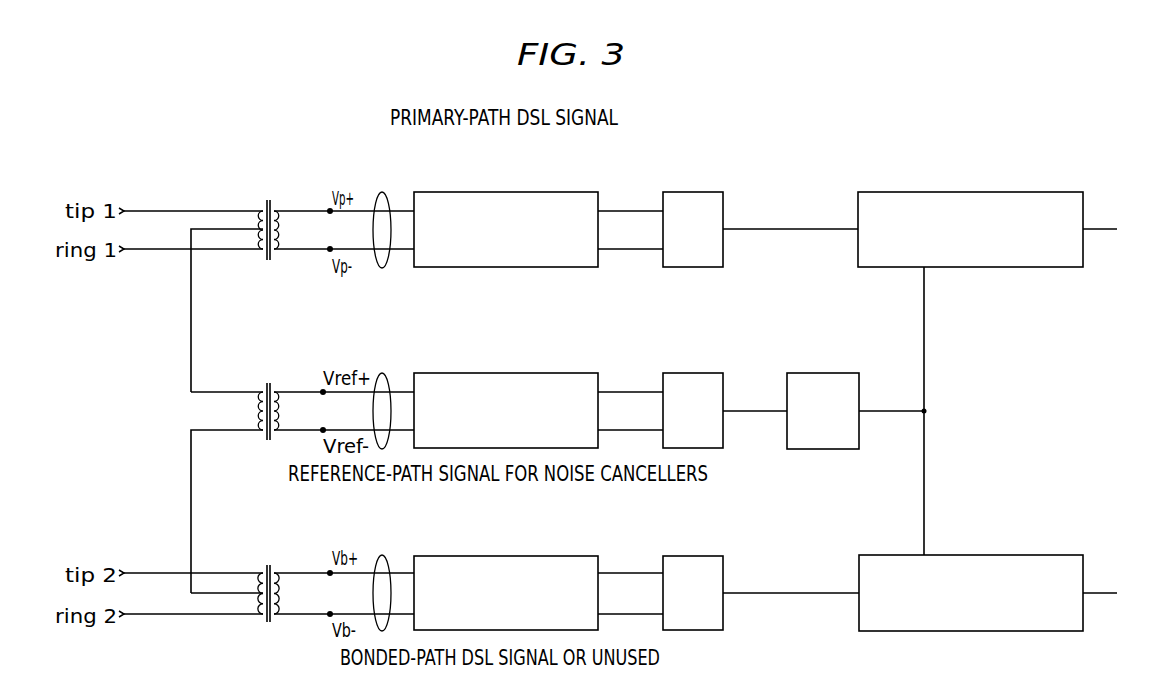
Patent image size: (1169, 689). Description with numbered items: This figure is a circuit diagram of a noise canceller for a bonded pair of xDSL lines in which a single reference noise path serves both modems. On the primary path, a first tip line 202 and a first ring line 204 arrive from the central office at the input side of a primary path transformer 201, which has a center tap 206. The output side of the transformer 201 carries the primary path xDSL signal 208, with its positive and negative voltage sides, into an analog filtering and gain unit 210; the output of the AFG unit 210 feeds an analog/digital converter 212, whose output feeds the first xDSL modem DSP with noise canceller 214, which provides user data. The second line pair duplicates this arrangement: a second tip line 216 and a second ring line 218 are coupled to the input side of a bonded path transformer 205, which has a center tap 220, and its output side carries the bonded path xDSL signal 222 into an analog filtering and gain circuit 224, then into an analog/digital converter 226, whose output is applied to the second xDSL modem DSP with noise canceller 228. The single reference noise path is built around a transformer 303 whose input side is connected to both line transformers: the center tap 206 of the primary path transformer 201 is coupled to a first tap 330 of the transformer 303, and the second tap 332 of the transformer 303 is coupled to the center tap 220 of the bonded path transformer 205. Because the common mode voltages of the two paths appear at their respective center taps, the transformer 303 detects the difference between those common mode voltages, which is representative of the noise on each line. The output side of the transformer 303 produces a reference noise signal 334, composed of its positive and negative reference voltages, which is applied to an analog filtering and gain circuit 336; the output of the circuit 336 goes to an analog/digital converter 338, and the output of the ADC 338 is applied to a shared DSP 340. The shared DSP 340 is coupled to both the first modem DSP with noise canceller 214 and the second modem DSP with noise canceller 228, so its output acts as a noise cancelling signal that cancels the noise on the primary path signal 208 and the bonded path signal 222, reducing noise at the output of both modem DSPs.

The primary path transformer 201 is at (262, 208).
The tip 1 line 202 is at (185, 210).
The ring 1 line 204 is at (222, 250).
The bonded path transformer 205 is at (262, 571).
The center tap 206 is at (187, 240).
The primary path xDSL signal 208 is at (385, 192).
The analog filtering and gain unit 210 is at (504, 192).
The analog/digital converter 212 is at (690, 192).
The xDSL modem 1 DSP with noise canceller 214 is at (969, 192).
The tip 2 line 216 is at (180, 573).
The ring 2 line 218 is at (220, 615).
The center tap 220 is at (188, 585).
The bonded path xDSL signal 222 is at (385, 556).
The analog filtering and gain circuit 224 is at (504, 556).
The analog/digital converter 226 is at (690, 556).
The xDSL modem 2 DSP with noise canceller 228 is at (969, 555).
The reference noise path transformer 303 is at (273, 385).
The first tap 330 is at (215, 392).
The second tap 332 is at (228, 430).
The reference noise signal 334 is at (387, 375).
The analog filtering and gain circuit 336 is at (504, 373).
The analog/digital converter 338 is at (690, 373).
The shared DSP 340 is at (820, 373).